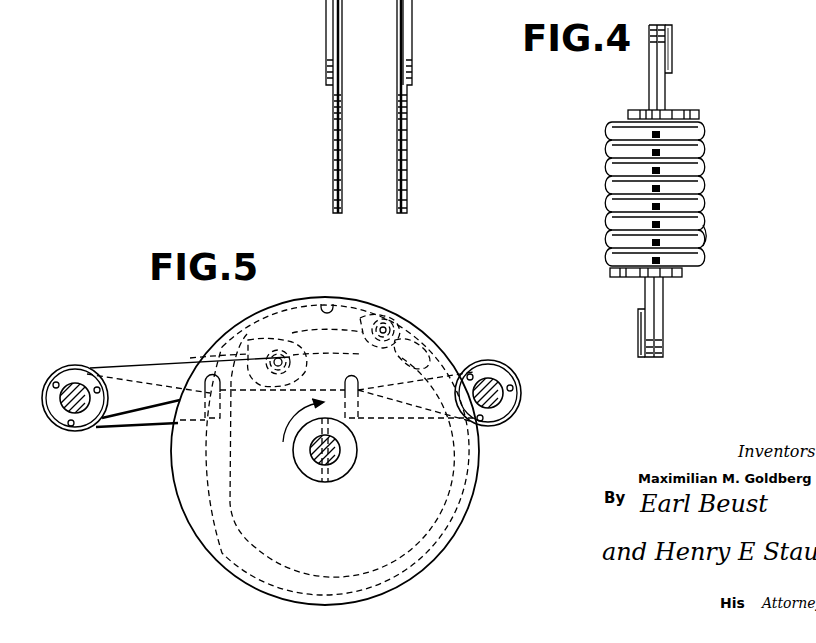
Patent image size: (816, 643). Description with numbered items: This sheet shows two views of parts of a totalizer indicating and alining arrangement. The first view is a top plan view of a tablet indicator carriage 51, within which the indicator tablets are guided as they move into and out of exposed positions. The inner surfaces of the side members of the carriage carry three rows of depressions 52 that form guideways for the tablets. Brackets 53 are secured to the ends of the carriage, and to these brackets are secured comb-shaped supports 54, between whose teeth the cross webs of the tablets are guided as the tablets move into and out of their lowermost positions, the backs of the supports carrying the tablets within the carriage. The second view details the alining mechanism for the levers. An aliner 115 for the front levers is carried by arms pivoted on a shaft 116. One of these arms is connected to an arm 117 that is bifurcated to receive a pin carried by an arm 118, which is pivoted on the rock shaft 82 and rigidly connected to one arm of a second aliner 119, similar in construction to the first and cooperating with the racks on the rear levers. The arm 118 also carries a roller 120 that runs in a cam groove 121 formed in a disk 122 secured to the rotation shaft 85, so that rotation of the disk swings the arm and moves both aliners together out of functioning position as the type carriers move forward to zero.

In FIG. 4, the carriage 51 is at (705, 132).
In FIG. 4, the depressions 52 is at (706, 243).
In FIG. 4, the brackets 53 is at (668, 108).
In FIG. 4, the comb-shaped supports 54 is at (653, 85).
In FIG. 5, the rock shaft 82 is at (495, 400).
In FIG. 5, the rotation shaft 85 is at (336, 456).
In FIG. 5, the aliner 115 is at (213, 388).
In FIG. 5, the shaft 116 is at (86, 408).
In FIG. 5, the arm 117 is at (150, 370).
In FIG. 5, the arm 118 is at (418, 364).
In FIG. 5, the aliner 119 is at (358, 384).
In FIG. 5, the roller 120 is at (400, 337).
In FIG. 5, the cam groove 121 is at (338, 303).
In FIG. 5, the disk 122 is at (323, 300).